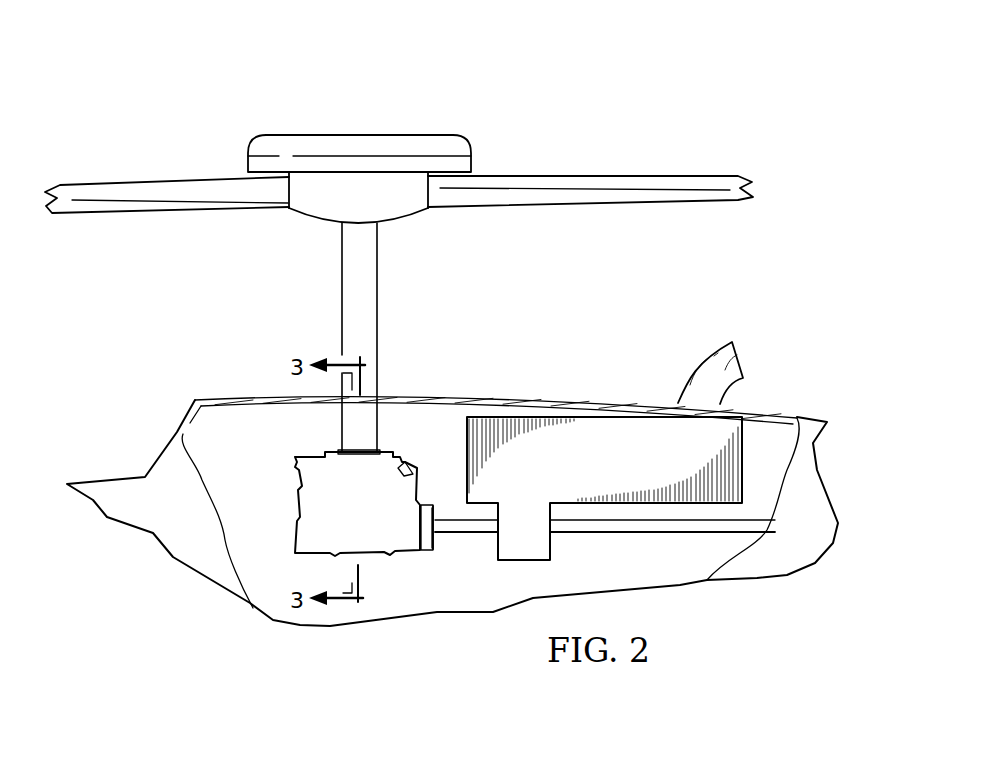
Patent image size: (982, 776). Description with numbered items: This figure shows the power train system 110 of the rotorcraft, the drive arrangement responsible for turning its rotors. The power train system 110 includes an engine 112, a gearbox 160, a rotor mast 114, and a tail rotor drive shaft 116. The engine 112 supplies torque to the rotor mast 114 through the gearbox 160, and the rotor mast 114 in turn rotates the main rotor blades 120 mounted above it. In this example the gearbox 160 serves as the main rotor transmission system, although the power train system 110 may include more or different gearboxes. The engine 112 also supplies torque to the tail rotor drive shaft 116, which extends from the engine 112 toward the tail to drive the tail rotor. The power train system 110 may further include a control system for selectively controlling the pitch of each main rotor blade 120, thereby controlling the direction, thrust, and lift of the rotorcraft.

The power train system 110 is at (326, 123).
The main rotor blades 120 is at (622, 175).
The rotor mast 114 is at (342, 275).
The engine 112 is at (625, 473).
The tail rotor drive shaft 116 is at (623, 533).
The gearbox 160 is at (381, 513).